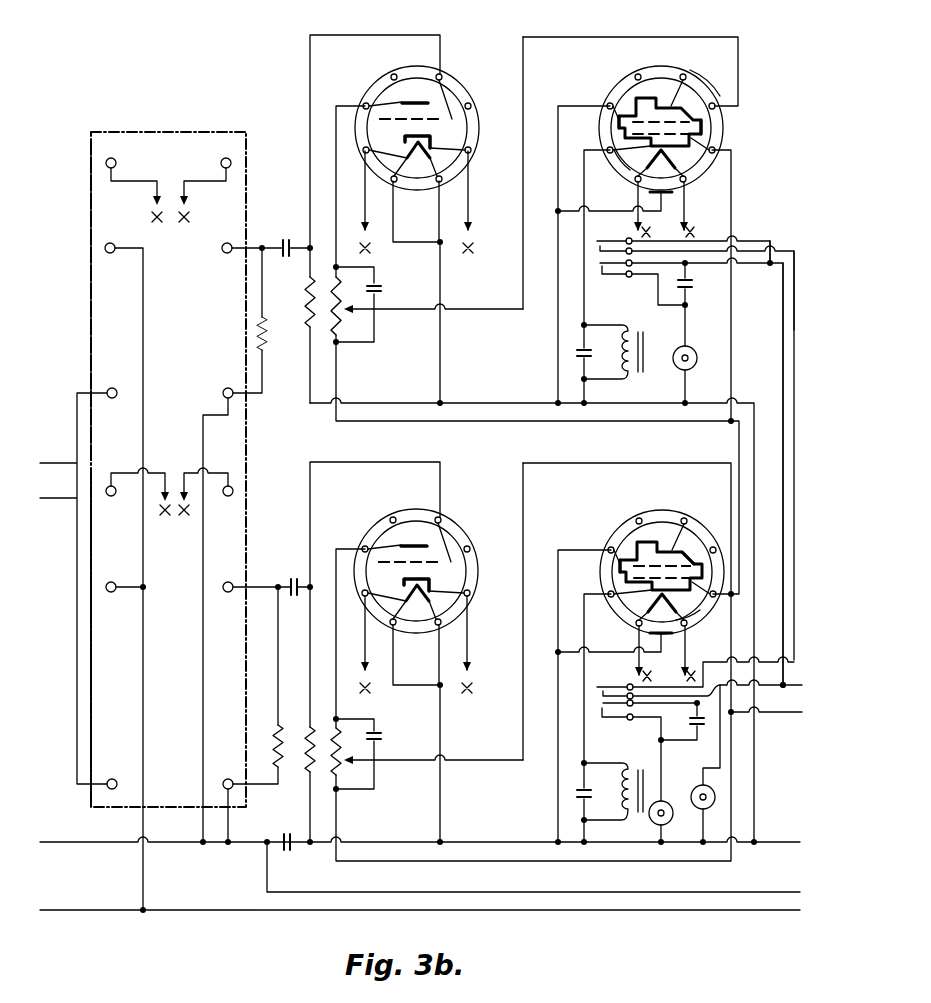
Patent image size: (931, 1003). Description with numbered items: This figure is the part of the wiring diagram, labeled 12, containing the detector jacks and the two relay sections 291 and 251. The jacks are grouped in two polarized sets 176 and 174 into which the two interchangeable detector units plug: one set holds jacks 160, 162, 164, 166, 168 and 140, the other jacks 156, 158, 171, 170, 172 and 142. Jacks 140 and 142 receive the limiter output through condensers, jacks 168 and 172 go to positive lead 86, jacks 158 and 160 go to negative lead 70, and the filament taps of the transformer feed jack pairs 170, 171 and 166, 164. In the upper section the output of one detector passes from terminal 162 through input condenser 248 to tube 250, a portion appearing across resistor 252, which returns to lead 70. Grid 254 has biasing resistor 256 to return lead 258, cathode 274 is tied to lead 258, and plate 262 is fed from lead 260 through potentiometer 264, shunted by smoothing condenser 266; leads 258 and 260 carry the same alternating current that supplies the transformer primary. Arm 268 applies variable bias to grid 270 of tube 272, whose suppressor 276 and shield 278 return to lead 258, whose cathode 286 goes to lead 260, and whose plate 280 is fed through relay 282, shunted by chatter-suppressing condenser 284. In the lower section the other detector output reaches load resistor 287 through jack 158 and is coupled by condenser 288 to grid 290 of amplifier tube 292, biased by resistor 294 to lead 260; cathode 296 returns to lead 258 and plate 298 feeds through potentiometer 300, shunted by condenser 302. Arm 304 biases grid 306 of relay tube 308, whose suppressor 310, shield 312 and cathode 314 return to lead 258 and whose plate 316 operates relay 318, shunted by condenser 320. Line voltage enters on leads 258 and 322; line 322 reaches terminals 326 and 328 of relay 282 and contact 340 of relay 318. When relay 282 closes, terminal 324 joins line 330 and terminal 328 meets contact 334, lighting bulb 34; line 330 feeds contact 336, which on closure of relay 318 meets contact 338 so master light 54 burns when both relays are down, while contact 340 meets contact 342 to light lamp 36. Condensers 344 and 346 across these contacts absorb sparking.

The control unit 12 is at (177, 407).
The set of jacks and plugs 176 is at (67, 300).
The set of jacks and plugs 174 is at (91, 657).
The jack 166 is at (115, 157).
The jack 164 is at (228, 157).
The jack 168 is at (122, 571).
The terminal 162 is at (227, 253).
The jack 160 is at (221, 608).
The jack 140 is at (84, 578).
The jack 170 is at (134, 494).
The jack 171 is at (211, 494).
The jack 172 is at (122, 600).
The jack 158 is at (247, 600).
The jack 156 is at (225, 804).
The jack 142 is at (115, 777).
The input condenser 248 is at (284, 243).
The resistor 252 is at (266, 340).
The biasing resistor 256 is at (306, 312).
The condenser 288 is at (292, 582).
The load resistor 287 is at (276, 729).
The biasing resistor 294 is at (307, 777).
The negative lead 70 is at (178, 850).
The positive lead 86 is at (168, 913).
The relay section 251 is at (582, 701).
The relay section 291 is at (552, 240).
The return lead 258 is at (497, 403).
The lead 260 is at (454, 422).
The tube 250 is at (468, 84).
The plate 262 is at (425, 99).
The grid 254 is at (453, 116).
The cathode 274 is at (432, 137).
The potentiometer 264 is at (347, 279).
The condenser 266 is at (381, 287).
The arm 268 is at (366, 306).
The plate 280 is at (658, 96).
The tube 272 is at (686, 77).
The suppressor 276 is at (625, 108).
The grid 270 is at (704, 127).
The cathode 286 is at (640, 160).
The shield 278 is at (672, 197).
The terminal 326 is at (610, 234).
The terminal 324 is at (600, 250).
The terminal 328 is at (601, 269).
The contact 334 is at (627, 278).
The condenser 344 is at (695, 284).
The bulb 34 is at (695, 353).
The condenser 284 is at (578, 346).
The relay 282 is at (645, 350).
The line 330 is at (794, 251).
The line 322 is at (769, 270).
The amplifier tube 292 is at (466, 526).
The plate 298 is at (425, 541).
The grid 290 is at (452, 560).
The cathode 296 is at (431, 580).
The potentiometer 300 is at (343, 738).
The condenser 302 is at (381, 738).
The arm 304 is at (386, 764).
The relay tube 308 is at (664, 518).
The plate 316 is at (688, 534).
The suppressor 310 is at (662, 556).
The grid 306 is at (624, 580).
The cathode 314 is at (690, 616).
The shield 312 is at (665, 637).
The contact 336 is at (612, 680).
The contact 338 is at (603, 693).
The contact 340 is at (602, 712).
The contact 342 is at (620, 724).
The condenser 346 is at (698, 731).
The lamp 36 is at (668, 804).
The master light 54 is at (711, 807).
The condenser 320 is at (582, 789).
The relay 318 is at (638, 767).